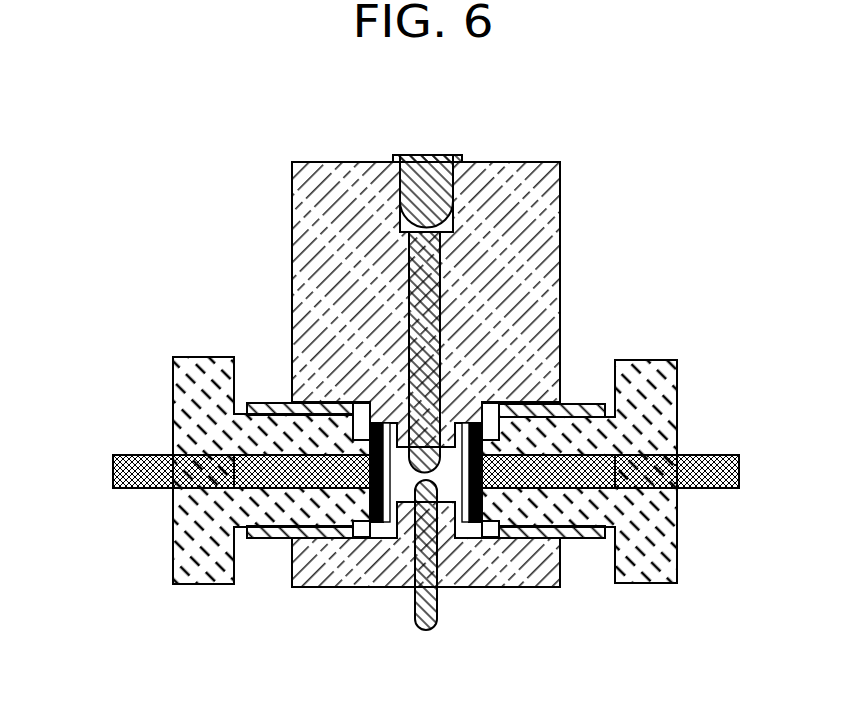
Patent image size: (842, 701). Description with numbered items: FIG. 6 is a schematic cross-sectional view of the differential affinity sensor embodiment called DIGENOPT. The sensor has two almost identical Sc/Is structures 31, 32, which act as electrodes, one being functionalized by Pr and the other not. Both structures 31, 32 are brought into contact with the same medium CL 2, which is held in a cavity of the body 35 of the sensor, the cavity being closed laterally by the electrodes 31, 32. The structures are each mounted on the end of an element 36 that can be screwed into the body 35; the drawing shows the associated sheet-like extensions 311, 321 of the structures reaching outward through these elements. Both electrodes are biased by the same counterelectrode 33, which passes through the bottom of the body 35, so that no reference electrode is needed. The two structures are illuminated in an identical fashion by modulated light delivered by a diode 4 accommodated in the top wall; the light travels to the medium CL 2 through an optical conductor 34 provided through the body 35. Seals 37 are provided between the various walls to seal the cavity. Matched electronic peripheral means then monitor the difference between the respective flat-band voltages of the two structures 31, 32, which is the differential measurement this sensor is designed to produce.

The diode 4 is at (428, 172).
The body of the sensor 35 is at (555, 240).
The optical conductor 34 is at (409, 328).
The element 36 is at (677, 383).
The first sheet lead 311 is at (113, 467).
The second sheet lead 321 is at (739, 471).
The counterelectrode 33 is at (428, 631).
The Sc/Is structure 31 is at (370, 522).
The Sc/Is structure 32 is at (484, 523).
The seals 37 is at (397, 435).
The medium CL 2 is at (457, 490).